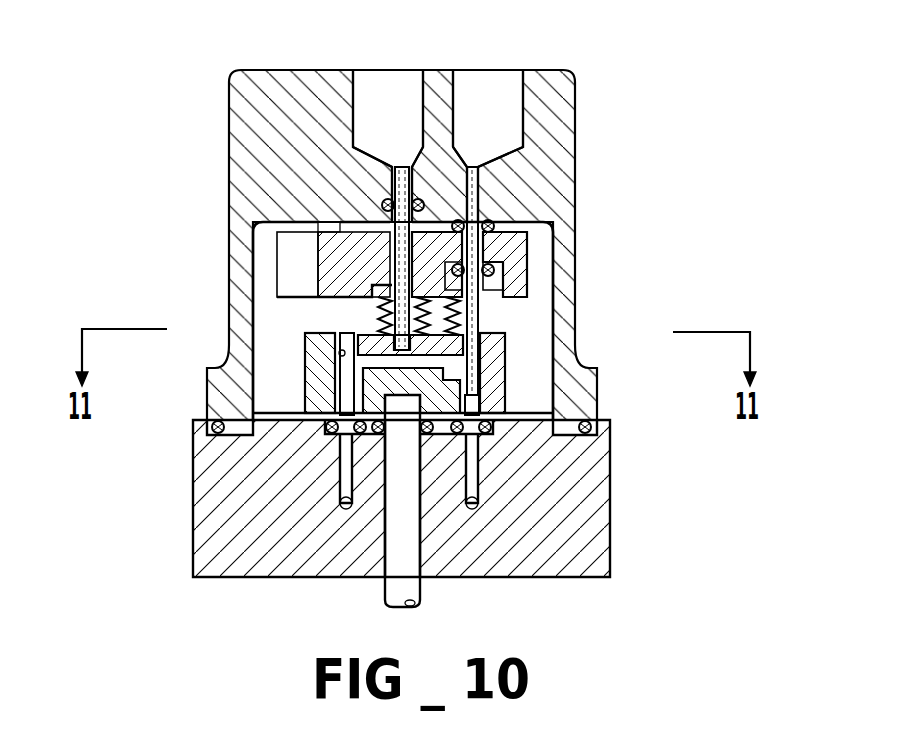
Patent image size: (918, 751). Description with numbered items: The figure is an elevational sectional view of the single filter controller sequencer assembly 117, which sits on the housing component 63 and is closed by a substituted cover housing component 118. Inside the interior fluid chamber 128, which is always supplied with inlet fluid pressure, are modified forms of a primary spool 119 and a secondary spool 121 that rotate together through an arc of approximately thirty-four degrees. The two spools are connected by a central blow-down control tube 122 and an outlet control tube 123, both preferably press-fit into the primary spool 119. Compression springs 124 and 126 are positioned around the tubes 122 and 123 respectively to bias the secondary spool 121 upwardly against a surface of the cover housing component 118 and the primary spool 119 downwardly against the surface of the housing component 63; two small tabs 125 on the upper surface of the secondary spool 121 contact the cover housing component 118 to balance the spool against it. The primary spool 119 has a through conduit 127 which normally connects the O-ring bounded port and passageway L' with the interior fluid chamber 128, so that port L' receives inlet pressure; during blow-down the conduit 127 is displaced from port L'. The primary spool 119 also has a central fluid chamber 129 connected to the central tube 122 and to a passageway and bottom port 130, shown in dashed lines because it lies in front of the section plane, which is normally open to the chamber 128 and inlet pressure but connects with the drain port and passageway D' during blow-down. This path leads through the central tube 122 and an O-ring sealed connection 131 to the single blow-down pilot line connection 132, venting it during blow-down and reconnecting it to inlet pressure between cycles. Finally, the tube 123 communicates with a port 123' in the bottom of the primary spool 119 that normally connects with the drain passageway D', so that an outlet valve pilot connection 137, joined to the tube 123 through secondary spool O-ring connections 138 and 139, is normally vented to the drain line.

The single filter controller sequencer assembly 117 is at (578, 185).
The cover housing component 118 is at (577, 234).
The primary spool 119 is at (300, 397).
The secondary spool 121 is at (527, 290).
The central blow-down control tube 122 is at (392, 257).
The outlet control tube 123 is at (499, 353).
The port 123' is at (573, 379).
The compression spring 124 is at (377, 307).
The tabs 125 is at (253, 226).
The compression spring 126 is at (462, 322).
The through conduit 127 is at (338, 354).
The interior fluid chamber 128 is at (273, 344).
The central fluid chamber 129 is at (452, 368).
The passageway and bottom port 130 is at (440, 385).
The O-ring sealed connection 131 is at (378, 204).
The blow-down pilot line connection 132 is at (413, 105).
The outlet valve pilot connection 137 is at (513, 100).
The secondary spool O-ring connection 138 is at (481, 222).
The secondary spool O-ring connection 139 is at (497, 272).
The housing component 63 is at (612, 455).
The drain port and passageway D' is at (493, 468).
The port and passageway L' is at (326, 496).